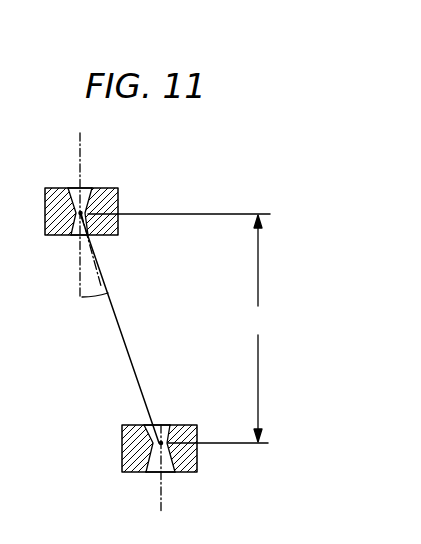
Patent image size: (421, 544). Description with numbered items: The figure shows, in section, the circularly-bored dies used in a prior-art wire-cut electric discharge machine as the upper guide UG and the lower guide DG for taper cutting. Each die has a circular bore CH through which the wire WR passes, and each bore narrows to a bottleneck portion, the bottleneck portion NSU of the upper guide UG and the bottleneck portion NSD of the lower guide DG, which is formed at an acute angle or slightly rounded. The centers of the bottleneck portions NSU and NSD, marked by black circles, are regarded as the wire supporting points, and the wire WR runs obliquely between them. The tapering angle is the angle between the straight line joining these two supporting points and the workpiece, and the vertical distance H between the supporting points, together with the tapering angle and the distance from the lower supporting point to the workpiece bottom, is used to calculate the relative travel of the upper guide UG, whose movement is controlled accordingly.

The upper guide UG is at (117, 189).
The lower guide DG is at (203, 434).
The circular bore of the die CH is at (70, 189).
The bottleneck portion of the upper guide NSU is at (99, 188).
The bottleneck portion of the lower guide NSD is at (180, 426).
The wire electrode WR is at (102, 271).
The vertical distance between both supporting points H is at (179, 328).